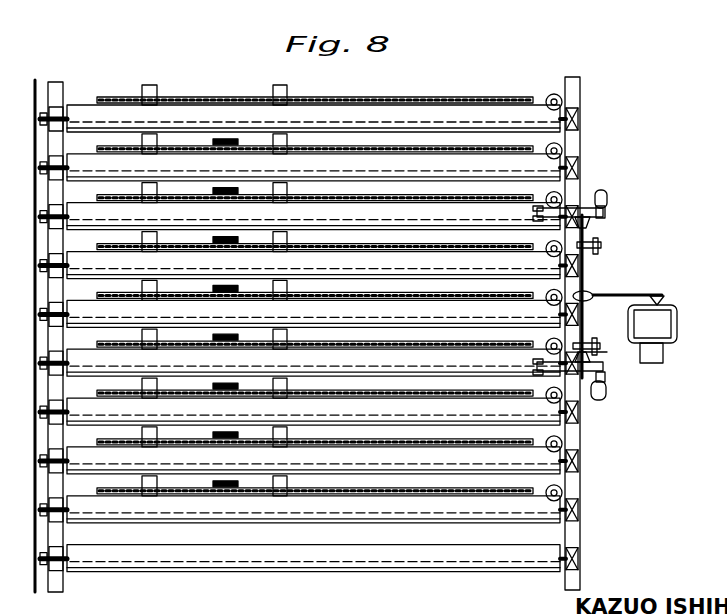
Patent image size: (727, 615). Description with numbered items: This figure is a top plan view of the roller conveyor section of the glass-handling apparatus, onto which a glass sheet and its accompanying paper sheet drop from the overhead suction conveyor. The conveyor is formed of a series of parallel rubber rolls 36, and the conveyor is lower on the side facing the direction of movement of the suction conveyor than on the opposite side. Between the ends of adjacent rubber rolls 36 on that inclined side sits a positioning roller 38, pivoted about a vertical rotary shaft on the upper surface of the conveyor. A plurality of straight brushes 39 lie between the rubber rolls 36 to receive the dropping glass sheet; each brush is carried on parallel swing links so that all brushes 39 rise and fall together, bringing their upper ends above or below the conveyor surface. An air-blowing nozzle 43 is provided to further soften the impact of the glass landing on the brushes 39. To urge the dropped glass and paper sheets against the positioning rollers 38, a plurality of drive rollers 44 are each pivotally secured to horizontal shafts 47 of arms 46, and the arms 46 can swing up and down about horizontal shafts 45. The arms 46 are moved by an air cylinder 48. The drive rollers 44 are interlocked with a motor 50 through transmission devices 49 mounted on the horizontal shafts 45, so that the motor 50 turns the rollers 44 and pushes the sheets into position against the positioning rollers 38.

The rubber rolls 36 is at (413, 106).
The positioning roller 38 is at (578, 152).
The straight brushes 39 is at (352, 106).
The air-blowing nozzle 43 is at (237, 144).
The drive rollers 44 is at (535, 214).
The horizontal shafts 45 is at (601, 242).
The arms 46 is at (605, 210).
The horizontal shafts 47 is at (542, 256).
The air cylinder 48 is at (607, 197).
The transmission devices 49 is at (585, 262).
The motor 50 is at (625, 327).